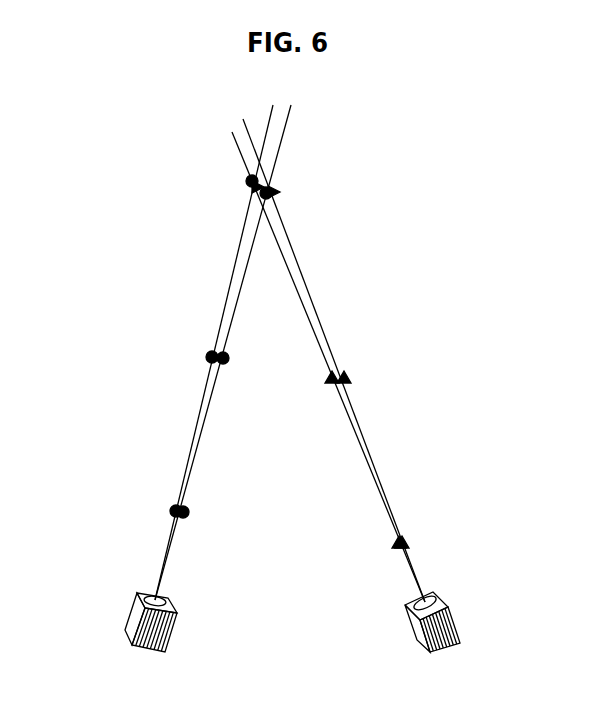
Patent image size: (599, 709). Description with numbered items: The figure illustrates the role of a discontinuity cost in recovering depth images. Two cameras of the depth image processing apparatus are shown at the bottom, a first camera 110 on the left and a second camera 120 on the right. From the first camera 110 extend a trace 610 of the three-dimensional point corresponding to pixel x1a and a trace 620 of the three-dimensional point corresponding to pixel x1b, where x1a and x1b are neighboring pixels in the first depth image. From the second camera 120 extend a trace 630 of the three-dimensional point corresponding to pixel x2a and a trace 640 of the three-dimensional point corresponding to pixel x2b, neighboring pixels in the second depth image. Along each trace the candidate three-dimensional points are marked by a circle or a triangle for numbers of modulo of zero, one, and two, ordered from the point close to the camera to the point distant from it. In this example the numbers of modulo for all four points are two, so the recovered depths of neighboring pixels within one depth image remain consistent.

The first camera 110 is at (135, 613).
The second camera 120 is at (453, 618).
The trace of 3D point X1a 610 is at (237, 259).
The trace of 3D point X1b 620 is at (239, 294).
The trace of 3D point X2a 630 is at (296, 287).
The trace of 3D point X2b 640 is at (298, 265).